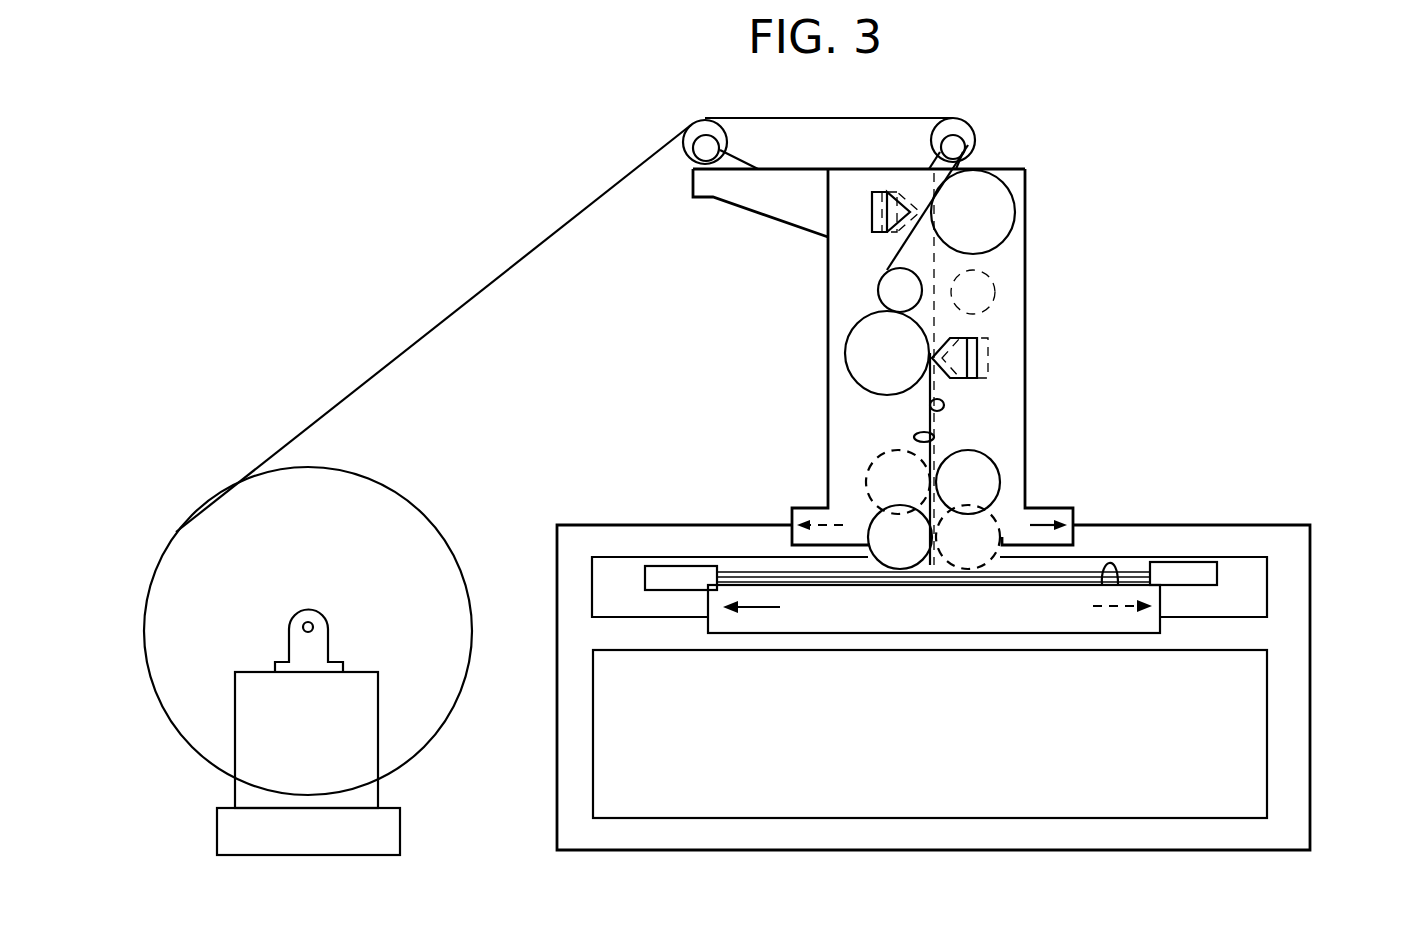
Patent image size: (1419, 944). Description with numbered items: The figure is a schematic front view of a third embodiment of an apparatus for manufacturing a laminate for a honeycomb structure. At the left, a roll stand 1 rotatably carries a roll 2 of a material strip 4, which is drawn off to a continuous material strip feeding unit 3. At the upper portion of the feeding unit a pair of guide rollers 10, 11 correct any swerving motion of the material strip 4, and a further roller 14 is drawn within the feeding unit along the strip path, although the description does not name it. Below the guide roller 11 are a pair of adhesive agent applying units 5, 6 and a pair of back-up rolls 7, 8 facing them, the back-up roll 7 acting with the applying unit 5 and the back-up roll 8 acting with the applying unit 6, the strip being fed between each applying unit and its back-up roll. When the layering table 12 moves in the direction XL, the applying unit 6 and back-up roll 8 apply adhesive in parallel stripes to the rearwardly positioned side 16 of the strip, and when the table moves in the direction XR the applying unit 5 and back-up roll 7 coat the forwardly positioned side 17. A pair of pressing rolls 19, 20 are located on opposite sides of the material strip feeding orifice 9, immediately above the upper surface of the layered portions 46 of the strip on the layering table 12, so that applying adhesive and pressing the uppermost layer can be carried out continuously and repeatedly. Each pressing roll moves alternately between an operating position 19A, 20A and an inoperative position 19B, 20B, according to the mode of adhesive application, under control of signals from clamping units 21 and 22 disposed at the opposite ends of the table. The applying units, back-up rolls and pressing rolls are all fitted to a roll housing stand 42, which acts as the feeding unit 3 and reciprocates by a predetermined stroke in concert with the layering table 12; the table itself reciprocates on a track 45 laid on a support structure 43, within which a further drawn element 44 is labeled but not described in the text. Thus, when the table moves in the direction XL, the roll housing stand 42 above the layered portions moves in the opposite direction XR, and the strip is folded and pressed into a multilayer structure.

The roll stand 1 is at (253, 758).
The roll 2 is at (192, 538).
The continuous material strip feeding unit 3 is at (1032, 164).
The material strip 4 is at (515, 263).
The adhesive agent applying unit 5 is at (870, 213).
The adhesive agent applying unit 6 is at (1000, 355).
The back-up roll 7 is at (1005, 218).
The back-up roll 8 is at (855, 355).
The material strip feeding orifice 9 is at (931, 568).
The guide roller 10 is at (693, 132).
The guide roller 11 is at (967, 128).
The layering table 12 is at (920, 625).
The guide roller 14 is at (887, 292).
The side of the material strip 16 is at (916, 437).
The side of the material strip 17 is at (944, 408).
The pressing roll 19 is at (868, 478).
The operating position 19A is at (892, 556).
The inoperative position 19B is at (866, 527).
The pressing roll 20 is at (1012, 477).
The operating position 20A is at (980, 570).
The inoperative position 20B is at (993, 503).
The clamping unit 21 is at (1195, 568).
The clamping unit 22 is at (675, 575).
The roll housing stand 42 is at (1015, 428).
The support structure 43 is at (1290, 632).
The guide groove 44 is at (1163, 530).
The track 45 is at (670, 640).
The layered portions 46 is at (1108, 584).
The direction of movement XL is at (758, 612).
The direction of movement XR is at (1130, 609).